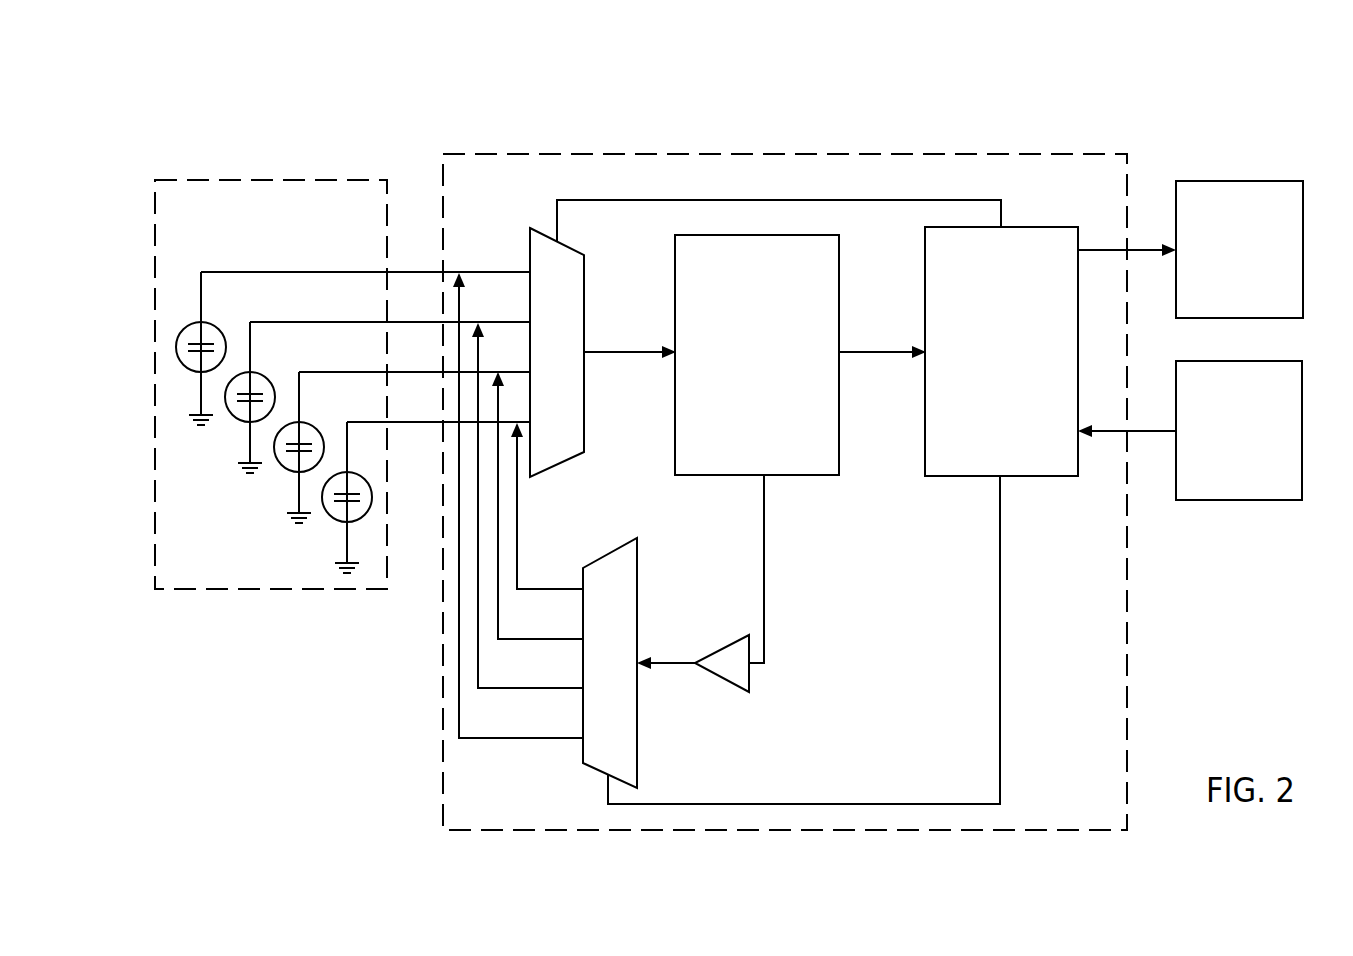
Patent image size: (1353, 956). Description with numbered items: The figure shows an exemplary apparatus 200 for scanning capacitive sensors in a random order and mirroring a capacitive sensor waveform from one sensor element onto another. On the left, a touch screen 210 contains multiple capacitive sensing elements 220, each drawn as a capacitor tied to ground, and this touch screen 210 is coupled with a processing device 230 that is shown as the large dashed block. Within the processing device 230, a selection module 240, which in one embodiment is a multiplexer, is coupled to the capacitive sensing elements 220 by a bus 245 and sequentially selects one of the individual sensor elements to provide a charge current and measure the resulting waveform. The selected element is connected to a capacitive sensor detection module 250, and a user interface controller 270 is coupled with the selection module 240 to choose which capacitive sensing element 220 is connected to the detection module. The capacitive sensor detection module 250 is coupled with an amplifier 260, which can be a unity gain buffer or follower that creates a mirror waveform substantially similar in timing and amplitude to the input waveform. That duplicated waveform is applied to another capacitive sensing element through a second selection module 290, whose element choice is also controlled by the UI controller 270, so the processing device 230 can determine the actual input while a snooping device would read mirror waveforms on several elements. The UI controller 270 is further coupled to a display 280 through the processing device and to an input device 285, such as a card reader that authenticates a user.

The apparatus 200 is at (328, 88).
The touch screen 210 is at (258, 590).
The capacitive sensing elements 220 is at (363, 521).
The processing device 230 is at (1025, 154).
The selection module 240 is at (558, 463).
The bus 245 is at (424, 236).
The capacitive sensor detection module 250 is at (813, 235).
The amplifier 260 is at (733, 640).
The user interface (UI) controller 270 is at (1078, 477).
The display 280 is at (1237, 181).
The input device 285 is at (1238, 500).
The selection module 290 is at (583, 763).